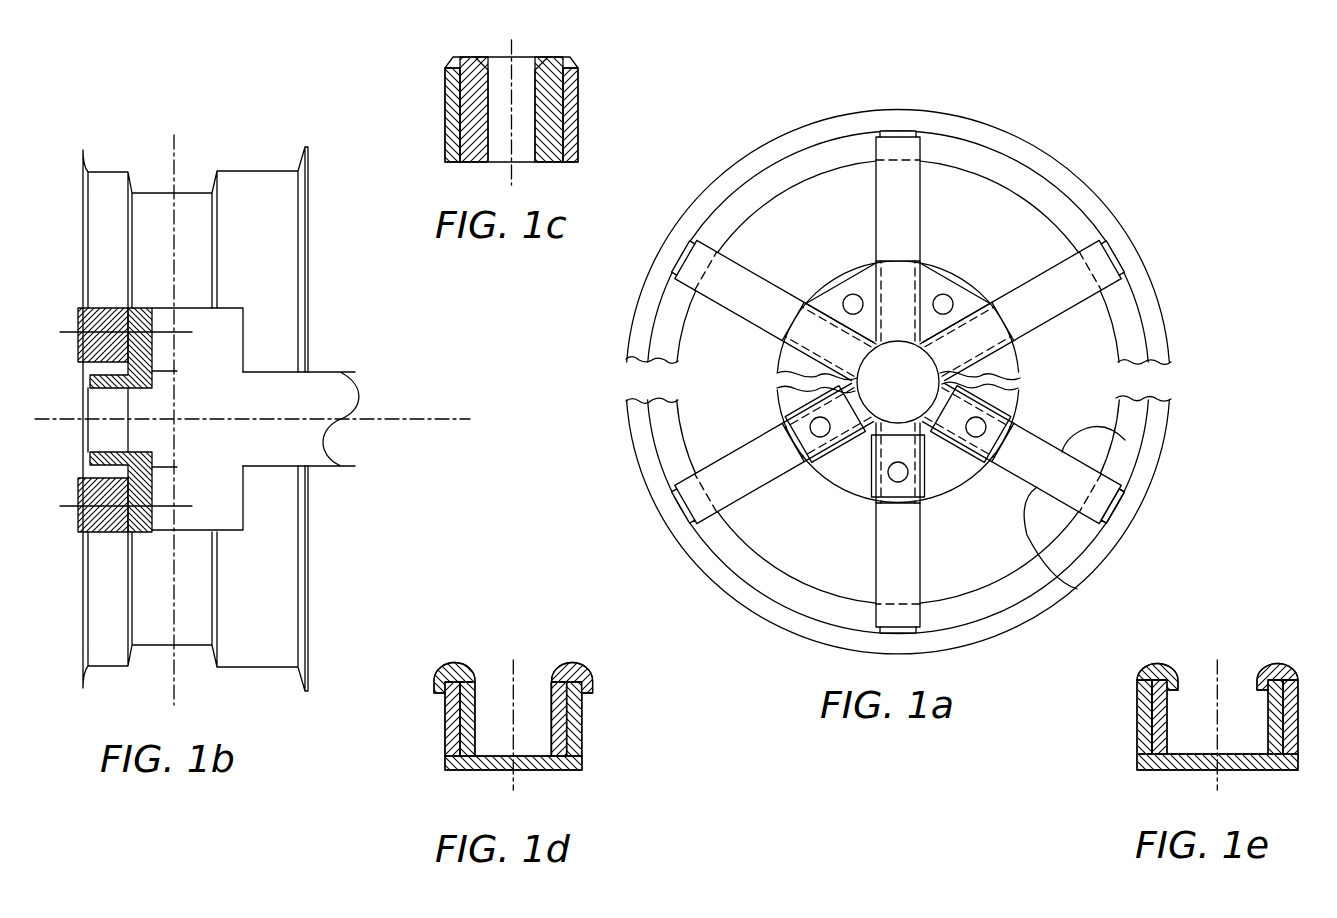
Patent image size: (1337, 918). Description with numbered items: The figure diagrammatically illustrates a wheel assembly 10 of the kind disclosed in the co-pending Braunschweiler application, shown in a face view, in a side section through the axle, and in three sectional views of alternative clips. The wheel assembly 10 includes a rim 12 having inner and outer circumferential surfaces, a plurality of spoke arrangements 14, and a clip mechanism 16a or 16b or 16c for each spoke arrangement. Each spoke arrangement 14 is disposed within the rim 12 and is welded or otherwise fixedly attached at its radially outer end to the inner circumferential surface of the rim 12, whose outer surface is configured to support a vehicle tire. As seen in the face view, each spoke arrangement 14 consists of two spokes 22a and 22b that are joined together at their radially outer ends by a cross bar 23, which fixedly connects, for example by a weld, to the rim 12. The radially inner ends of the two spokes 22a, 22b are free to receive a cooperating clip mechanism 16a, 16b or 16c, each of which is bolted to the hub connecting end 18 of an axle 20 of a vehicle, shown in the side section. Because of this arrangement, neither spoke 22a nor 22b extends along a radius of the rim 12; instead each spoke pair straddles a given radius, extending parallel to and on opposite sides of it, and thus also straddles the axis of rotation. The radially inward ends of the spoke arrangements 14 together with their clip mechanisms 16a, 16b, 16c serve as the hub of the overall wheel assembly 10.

In FIG. 1A, the wheel assembly 10 is at (1127, 152).
In FIG. 1A, the rim 12 is at (709, 206).
In FIG. 1A, the spoke arrangements 14 is at (947, 205).
In FIG. 1D, the clip mechanism 16a is at (583, 727).
In FIG. 1E, the clip mechanism 16b is at (1137, 742).
In FIG. 1C, the clip mechanism 16c is at (445, 102).
In FIG. 1B, the hub connecting end 18 is at (232, 503).
In FIG. 1B, the axle 20 is at (318, 388).
In FIG. 1A, the spoke 22a is at (1125, 440).
In FIG. 1A, the spoke 22b is at (1077, 589).
In FIG. 1A, the cross bar 23 is at (1117, 512).